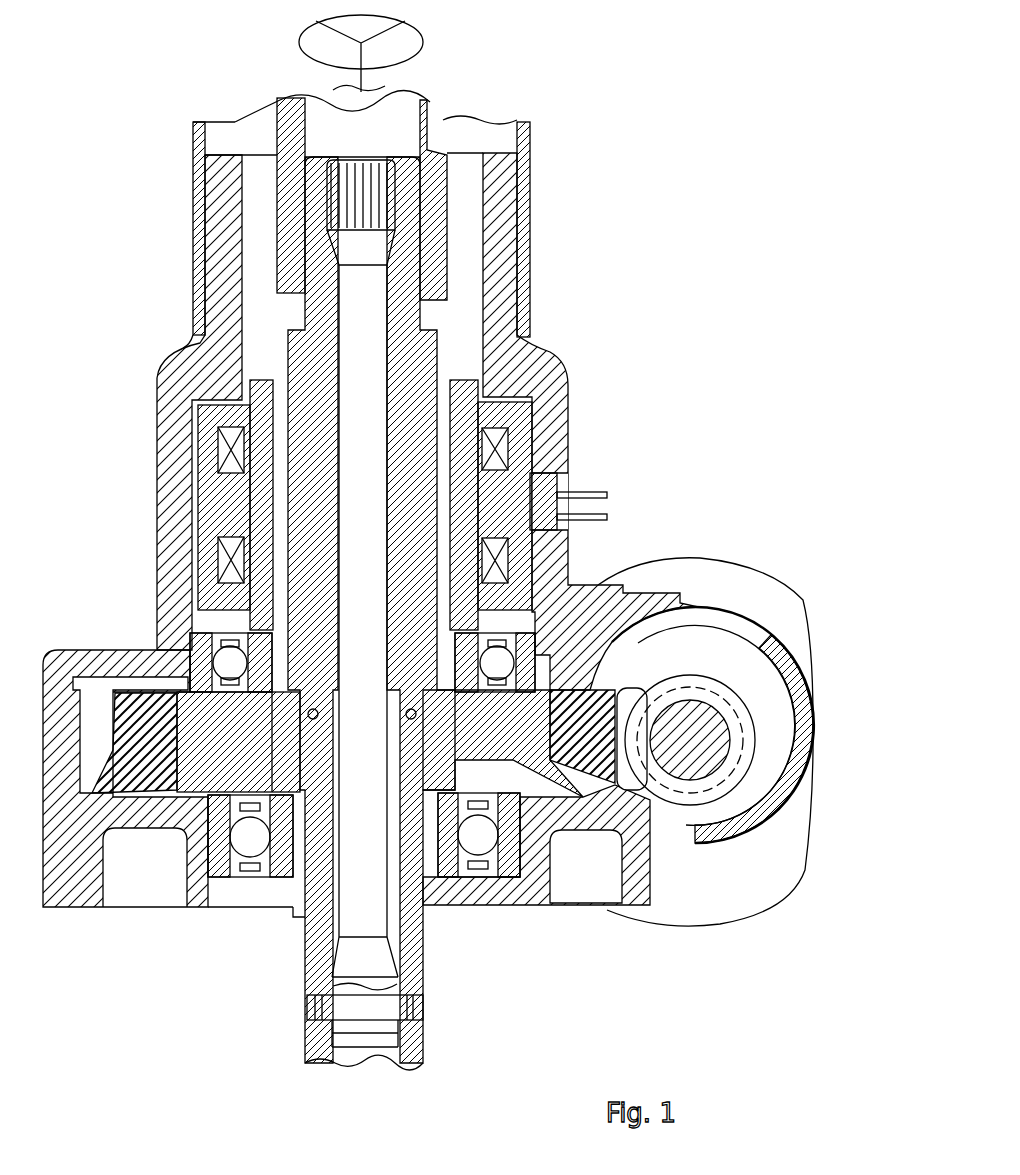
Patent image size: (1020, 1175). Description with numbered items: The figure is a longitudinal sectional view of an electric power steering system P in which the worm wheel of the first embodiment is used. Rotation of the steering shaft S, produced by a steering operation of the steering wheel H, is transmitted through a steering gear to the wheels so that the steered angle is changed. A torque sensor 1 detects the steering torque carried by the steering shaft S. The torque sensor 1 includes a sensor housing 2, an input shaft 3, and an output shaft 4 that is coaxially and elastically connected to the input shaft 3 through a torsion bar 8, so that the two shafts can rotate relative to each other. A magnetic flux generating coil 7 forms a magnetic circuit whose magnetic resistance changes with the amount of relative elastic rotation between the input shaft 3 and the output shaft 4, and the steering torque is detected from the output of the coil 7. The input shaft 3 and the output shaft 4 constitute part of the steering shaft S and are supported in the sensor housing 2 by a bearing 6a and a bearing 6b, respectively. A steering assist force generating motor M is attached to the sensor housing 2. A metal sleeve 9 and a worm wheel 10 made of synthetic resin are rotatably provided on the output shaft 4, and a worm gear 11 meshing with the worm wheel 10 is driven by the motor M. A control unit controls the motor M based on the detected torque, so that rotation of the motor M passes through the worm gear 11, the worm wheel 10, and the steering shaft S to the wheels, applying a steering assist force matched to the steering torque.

The steering wheel H is at (423, 42).
The steering shaft S is at (432, 118).
The power steering system P is at (546, 179).
The input shaft 3 is at (425, 345).
The sensor housing 2 is at (560, 410).
The torque sensor 1 is at (549, 461).
The magnetic flux generating coil 7 is at (505, 560).
The steering assist force generating motor M is at (750, 583).
The bearing 6a is at (222, 660).
The bearing 6b is at (242, 848).
The metal sleeve 9 is at (537, 745).
The worm wheel 10 is at (593, 797).
The output shaft 4 is at (305, 928).
The torsion bar 8 is at (350, 953).
The worm gear 11 is at (707, 800).